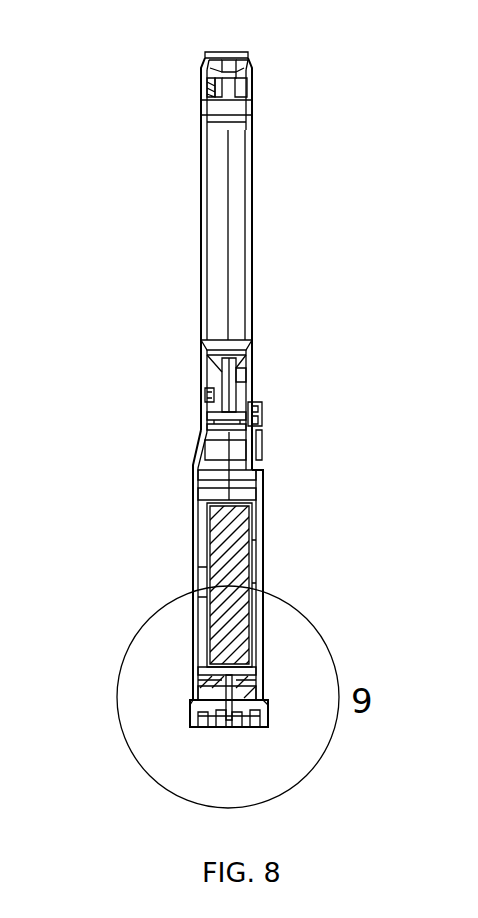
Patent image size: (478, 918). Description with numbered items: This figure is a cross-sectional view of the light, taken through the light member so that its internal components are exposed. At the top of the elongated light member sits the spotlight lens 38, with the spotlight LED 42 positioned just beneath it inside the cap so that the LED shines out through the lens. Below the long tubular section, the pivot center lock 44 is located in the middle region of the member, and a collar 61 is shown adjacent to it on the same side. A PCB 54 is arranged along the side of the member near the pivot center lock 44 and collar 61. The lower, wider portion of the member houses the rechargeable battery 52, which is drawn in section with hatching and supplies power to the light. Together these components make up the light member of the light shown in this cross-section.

The spotlight lens 38 is at (225, 53).
The spotlight LED 42 is at (223, 68).
The pivot center lock 44 is at (212, 365).
The collar 61 is at (212, 395).
The PCB 54 is at (262, 427).
The rechargeable battery 52 is at (215, 551).